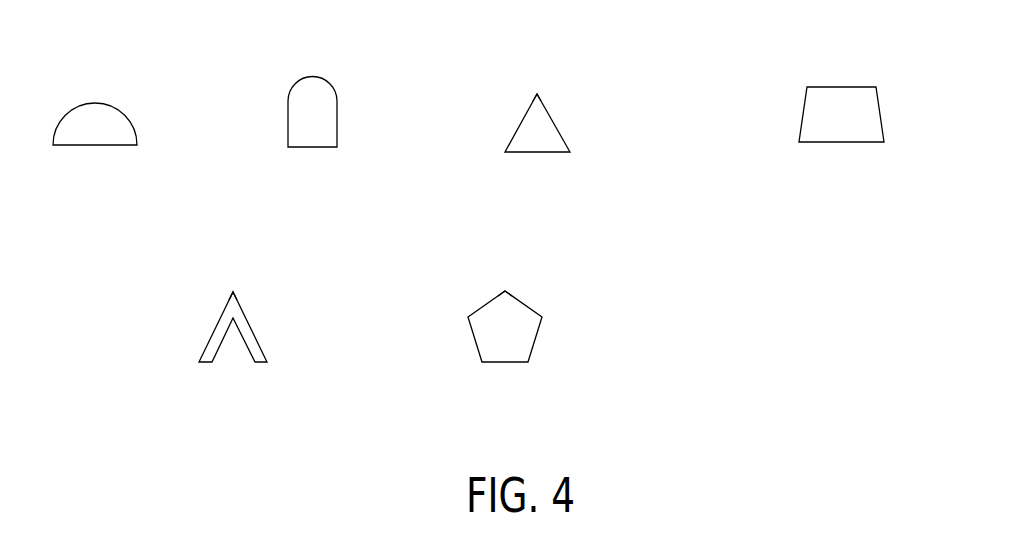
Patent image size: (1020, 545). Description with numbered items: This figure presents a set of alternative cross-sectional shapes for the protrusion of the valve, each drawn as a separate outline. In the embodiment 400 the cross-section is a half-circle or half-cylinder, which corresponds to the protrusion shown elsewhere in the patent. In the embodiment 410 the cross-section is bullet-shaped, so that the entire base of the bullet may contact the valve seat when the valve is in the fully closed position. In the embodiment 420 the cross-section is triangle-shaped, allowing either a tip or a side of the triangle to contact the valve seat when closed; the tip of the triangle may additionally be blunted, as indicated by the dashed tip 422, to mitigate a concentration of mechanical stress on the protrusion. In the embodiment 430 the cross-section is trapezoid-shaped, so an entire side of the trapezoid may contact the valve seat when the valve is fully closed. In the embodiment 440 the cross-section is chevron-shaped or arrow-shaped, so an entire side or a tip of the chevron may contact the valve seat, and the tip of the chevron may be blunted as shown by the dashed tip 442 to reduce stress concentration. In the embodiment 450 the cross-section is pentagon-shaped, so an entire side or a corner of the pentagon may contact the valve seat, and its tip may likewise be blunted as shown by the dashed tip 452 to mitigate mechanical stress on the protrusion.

The half-circle protrusion embodiment 400 is at (123, 57).
The bullet-shaped protrusion embodiment 410 is at (328, 52).
The triangle-shaped protrusion embodiment 420 is at (561, 64).
The dashed tip 422 is at (536, 96).
The trapezoid-shaped protrusion embodiment 430 is at (841, 62).
The chevron-shaped protrusion embodiment 440 is at (235, 260).
The dashed tip 442 is at (231, 296).
The pentagon-shaped protrusion embodiment 450 is at (507, 260).
The dashed tip 452 is at (503, 296).